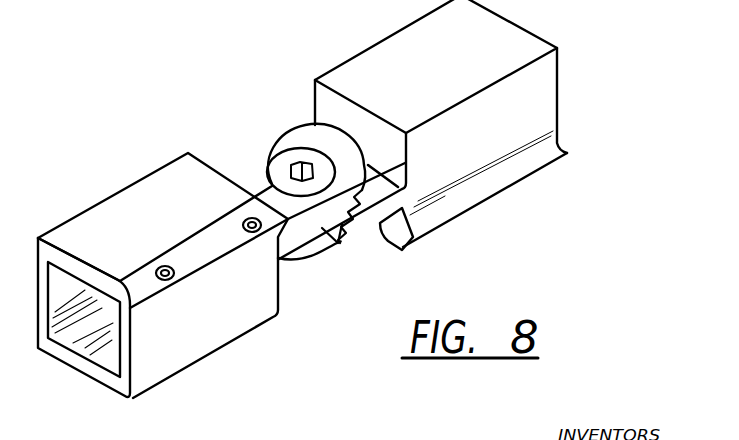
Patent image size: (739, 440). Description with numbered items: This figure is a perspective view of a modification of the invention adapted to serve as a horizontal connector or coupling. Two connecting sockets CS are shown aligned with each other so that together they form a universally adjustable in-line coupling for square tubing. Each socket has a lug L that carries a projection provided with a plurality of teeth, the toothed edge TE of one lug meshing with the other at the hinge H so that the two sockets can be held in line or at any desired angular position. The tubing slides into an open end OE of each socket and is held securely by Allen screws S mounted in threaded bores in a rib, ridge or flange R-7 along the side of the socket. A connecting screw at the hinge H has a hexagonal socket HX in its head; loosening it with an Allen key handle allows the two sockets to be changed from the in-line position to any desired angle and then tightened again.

The connecting socket CS is at (103, 204).
The open end OE is at (100, 358).
The hinge plate R-7 is at (216, 264).
The Allen screw S is at (243, 225).
The hinge boss H is at (277, 163).
The hexagonal socket HX is at (303, 162).
The lug L is at (298, 128).
The toothed edge TE is at (340, 243).